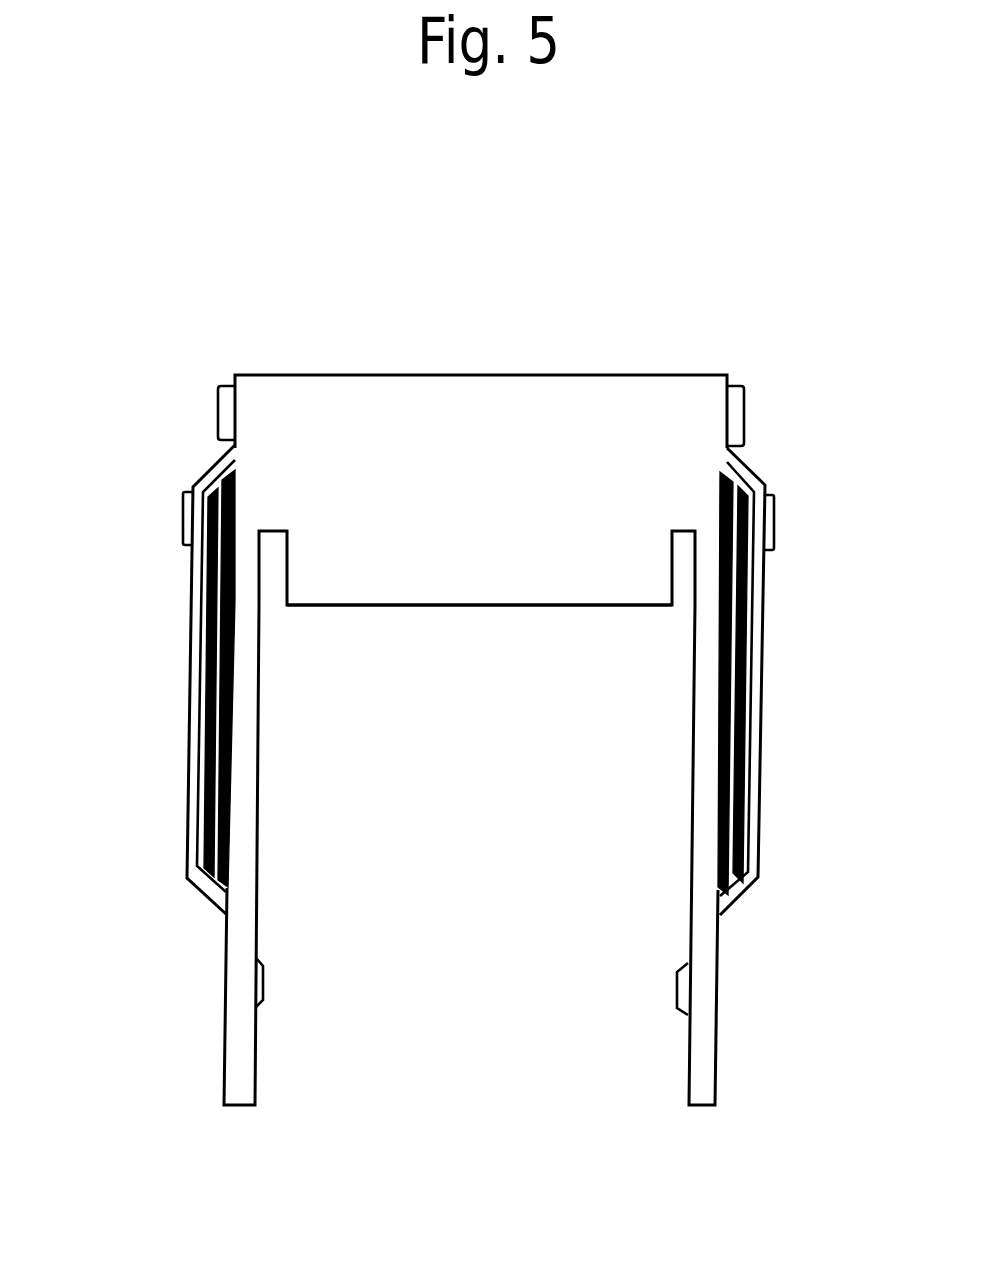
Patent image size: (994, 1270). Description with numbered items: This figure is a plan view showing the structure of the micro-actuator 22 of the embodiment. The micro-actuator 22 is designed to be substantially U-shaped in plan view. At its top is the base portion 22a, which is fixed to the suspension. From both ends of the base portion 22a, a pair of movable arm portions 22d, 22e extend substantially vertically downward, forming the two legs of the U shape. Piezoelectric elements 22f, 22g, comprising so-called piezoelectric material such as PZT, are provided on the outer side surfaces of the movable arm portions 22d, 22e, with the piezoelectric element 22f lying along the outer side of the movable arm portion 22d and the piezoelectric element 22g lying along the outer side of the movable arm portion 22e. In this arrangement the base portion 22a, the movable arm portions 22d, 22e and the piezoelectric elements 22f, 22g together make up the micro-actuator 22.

The micro-actuator 22 is at (578, 326).
The base portion 22a is at (482, 568).
The movable arm portion 22d is at (715, 1050).
The movable arm portion 22e is at (224, 1048).
The piezoelectric element 22f is at (763, 665).
The piezoelectric element 22g is at (190, 660).